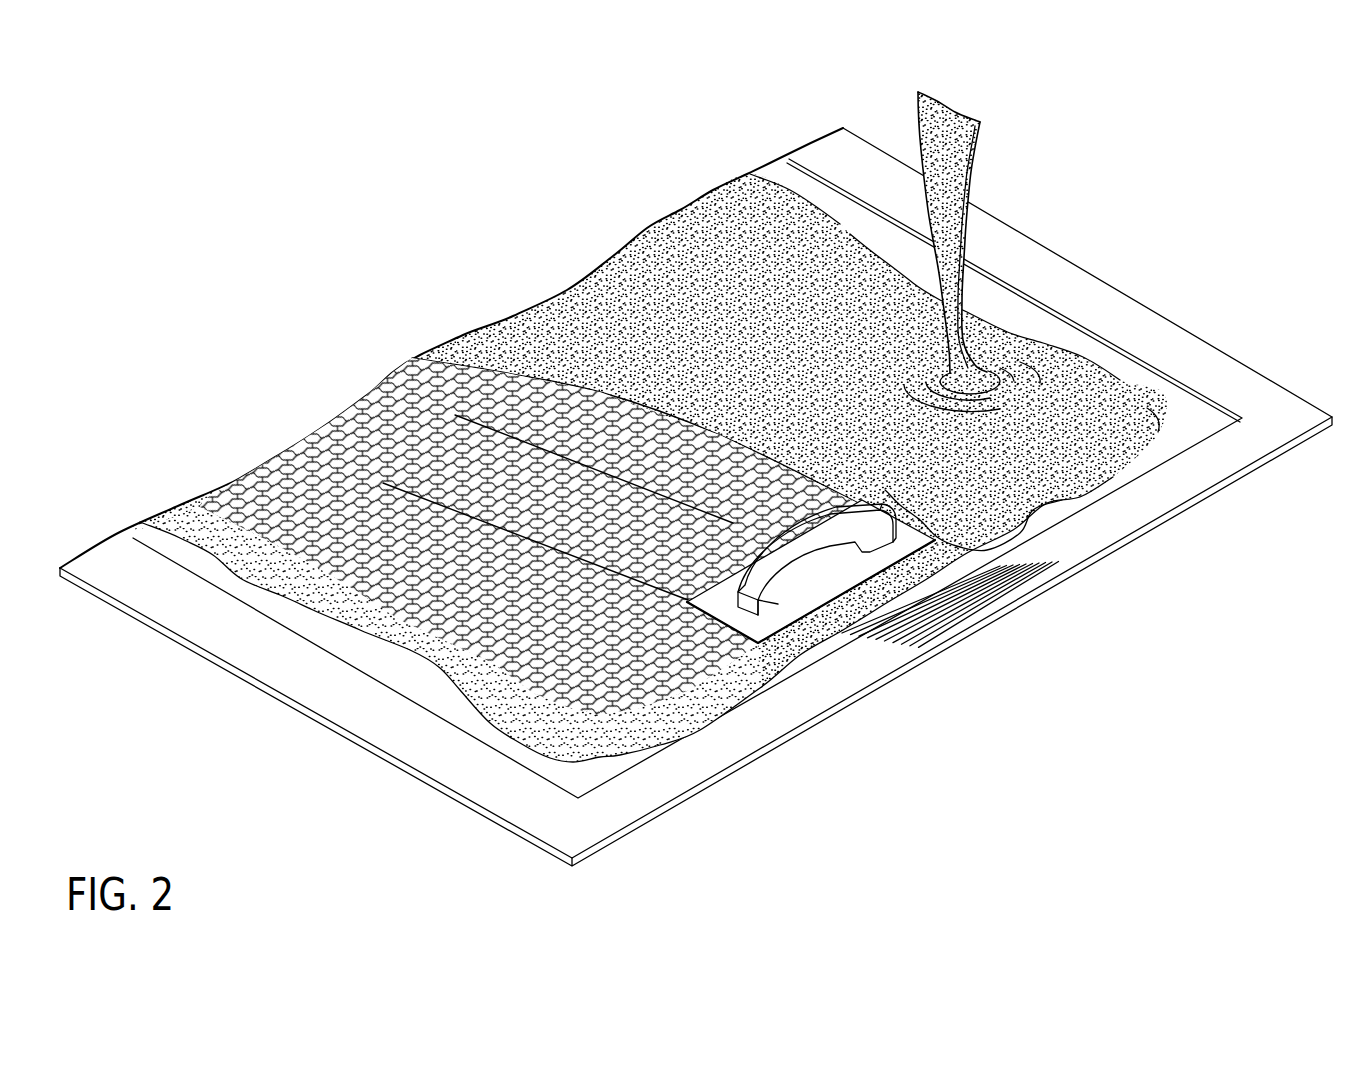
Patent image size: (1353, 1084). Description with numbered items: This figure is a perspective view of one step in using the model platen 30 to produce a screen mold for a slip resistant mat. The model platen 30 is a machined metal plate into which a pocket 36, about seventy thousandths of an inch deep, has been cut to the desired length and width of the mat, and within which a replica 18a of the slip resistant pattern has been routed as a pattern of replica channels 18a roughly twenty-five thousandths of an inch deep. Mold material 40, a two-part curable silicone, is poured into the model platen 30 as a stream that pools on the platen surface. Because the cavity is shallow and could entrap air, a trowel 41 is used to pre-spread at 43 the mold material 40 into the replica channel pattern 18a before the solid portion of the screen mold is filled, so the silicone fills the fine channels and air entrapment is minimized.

The model platen 30 is at (1147, 322).
The pocket 36 is at (1207, 415).
The mold material 40 is at (960, 158).
The trowel 41 is at (838, 597).
The pre-spread mold material 43 is at (470, 446).
The replica of the slip resistant pattern 18a is at (253, 494).